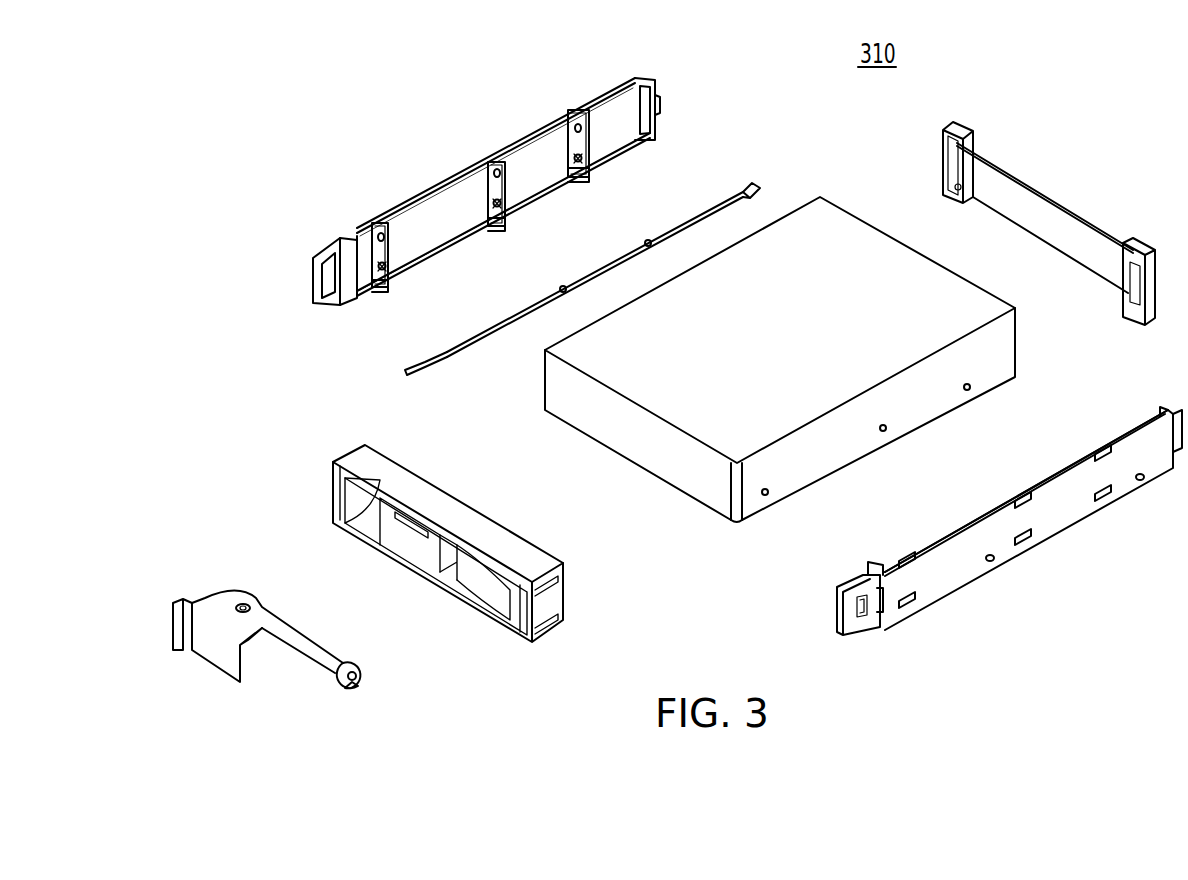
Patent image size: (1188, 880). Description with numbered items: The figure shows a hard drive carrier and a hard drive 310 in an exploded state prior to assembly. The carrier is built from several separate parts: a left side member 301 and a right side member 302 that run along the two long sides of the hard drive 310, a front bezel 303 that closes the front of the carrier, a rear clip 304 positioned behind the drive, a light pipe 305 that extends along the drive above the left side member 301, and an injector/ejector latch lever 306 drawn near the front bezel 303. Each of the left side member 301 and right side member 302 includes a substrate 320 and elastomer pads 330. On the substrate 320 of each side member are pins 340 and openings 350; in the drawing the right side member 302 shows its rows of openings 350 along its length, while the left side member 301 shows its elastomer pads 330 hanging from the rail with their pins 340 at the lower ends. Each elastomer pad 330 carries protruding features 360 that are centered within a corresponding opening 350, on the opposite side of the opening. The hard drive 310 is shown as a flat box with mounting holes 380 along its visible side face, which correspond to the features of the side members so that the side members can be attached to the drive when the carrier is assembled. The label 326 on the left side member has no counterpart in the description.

The left side member 301 is at (447, 180).
The rail body 326 is at (432, 232).
The elastomer pads 330 is at (395, 220).
The pins 340 is at (365, 288).
The protruding features 360 is at (380, 234).
The light pipe 305 is at (748, 183).
The hard drive 310 is at (816, 205).
The mounting holes 380 is at (766, 496).
The rear clip 304 is at (1053, 203).
The front bezel 303 is at (355, 460).
The injector/ejector latch lever 306 is at (226, 600).
The right side member 302 is at (978, 578).
The substrate 320 is at (968, 526).
The openings 350 is at (907, 557).